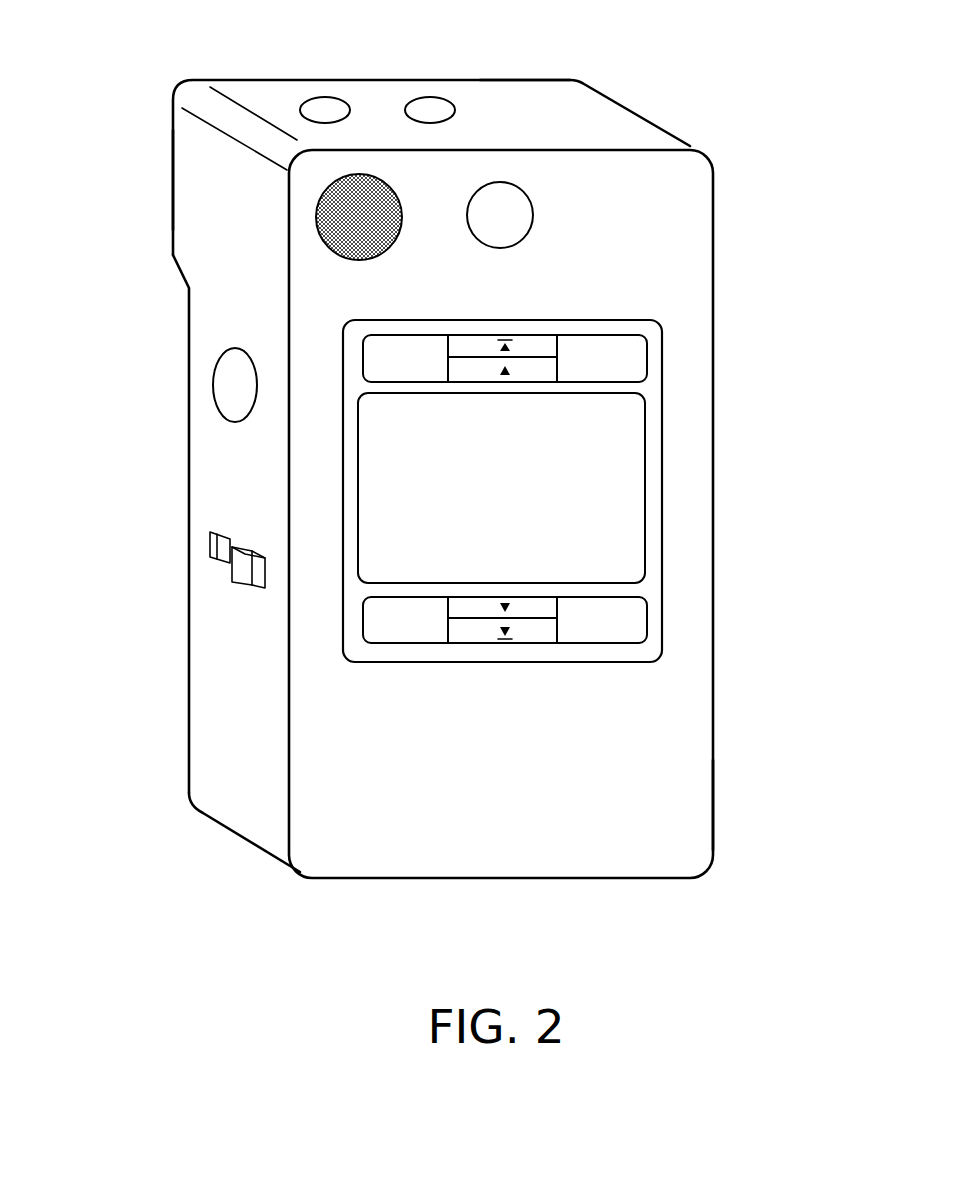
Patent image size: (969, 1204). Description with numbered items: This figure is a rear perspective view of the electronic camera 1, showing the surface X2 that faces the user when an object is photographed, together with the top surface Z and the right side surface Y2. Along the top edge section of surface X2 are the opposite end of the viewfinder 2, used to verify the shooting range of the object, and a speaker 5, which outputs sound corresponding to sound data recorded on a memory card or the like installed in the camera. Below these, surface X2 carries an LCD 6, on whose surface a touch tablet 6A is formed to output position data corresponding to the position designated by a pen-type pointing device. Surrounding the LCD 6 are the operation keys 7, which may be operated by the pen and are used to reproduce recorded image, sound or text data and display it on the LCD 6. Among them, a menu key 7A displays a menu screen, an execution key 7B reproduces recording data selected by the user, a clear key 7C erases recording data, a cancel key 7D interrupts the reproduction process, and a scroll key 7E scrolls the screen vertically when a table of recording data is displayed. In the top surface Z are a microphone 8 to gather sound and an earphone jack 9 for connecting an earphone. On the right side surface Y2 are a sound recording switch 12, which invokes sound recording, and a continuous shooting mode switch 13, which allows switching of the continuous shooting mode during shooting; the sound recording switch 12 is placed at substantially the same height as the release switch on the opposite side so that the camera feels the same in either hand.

The electronic camera 1 is at (620, 858).
The viewfinder 2 is at (535, 220).
The speaker 5 is at (393, 247).
The LCD 6 is at (397, 450).
The touch tablet 6A is at (388, 505).
The operation keys 7 is at (837, 215).
The menu key 7A is at (415, 630).
The execution key 7B is at (610, 607).
The clear key 7C is at (407, 335).
The cancel key 7D is at (622, 372).
The scroll key 7E is at (530, 608).
The microphone 8 is at (443, 95).
The earphone jack 9 is at (328, 95).
The sound recording switch 12 is at (232, 380).
The continuous shooting mode switch 13 is at (243, 570).
The right side surface Y2 is at (213, 180).
The top surface Z is at (548, 90).
The user-facing surface X2 is at (683, 828).